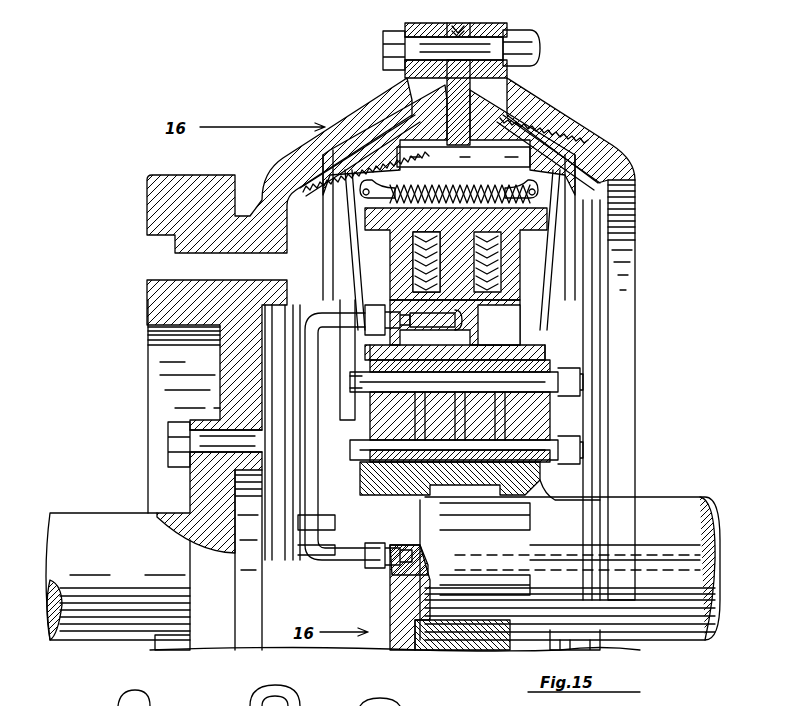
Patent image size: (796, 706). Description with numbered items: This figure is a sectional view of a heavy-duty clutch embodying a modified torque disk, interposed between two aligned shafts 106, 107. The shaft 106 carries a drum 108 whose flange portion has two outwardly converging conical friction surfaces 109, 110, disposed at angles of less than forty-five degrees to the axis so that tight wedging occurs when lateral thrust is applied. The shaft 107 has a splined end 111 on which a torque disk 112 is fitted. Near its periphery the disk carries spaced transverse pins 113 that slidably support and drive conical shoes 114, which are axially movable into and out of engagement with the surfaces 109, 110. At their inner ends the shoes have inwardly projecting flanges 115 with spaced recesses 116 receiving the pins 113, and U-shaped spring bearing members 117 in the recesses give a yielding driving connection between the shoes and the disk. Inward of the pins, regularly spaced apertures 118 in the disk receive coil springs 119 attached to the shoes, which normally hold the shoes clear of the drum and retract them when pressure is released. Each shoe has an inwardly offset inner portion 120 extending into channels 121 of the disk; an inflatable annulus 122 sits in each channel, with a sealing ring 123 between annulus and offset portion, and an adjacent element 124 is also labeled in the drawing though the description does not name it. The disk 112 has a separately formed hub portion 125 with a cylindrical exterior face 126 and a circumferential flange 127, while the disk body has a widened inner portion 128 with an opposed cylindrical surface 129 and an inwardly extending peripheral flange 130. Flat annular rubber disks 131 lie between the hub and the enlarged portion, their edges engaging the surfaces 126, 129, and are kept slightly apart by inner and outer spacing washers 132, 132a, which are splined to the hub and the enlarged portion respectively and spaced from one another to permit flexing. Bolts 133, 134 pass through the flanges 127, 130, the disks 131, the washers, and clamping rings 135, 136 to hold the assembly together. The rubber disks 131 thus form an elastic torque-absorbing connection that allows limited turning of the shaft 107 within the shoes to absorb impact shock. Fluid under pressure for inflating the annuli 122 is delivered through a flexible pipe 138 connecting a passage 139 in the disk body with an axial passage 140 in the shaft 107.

The shaft 106 is at (92, 520).
The shaft 107 is at (660, 636).
The drum 108 is at (217, 465).
The conical friction surface 109 is at (345, 120).
The conical friction surface 110 is at (562, 118).
The splined end 111 is at (405, 645).
The torque disk 112 is at (470, 680).
The transverse pins 113 is at (463, 156).
The conical shoes 114 is at (395, 110).
The inwardly projecting flanges 115 is at (410, 110).
The recesses 116 is at (449, 192).
The U-shaped spring bearing members 117 is at (447, 112).
The apertures 118 is at (456, 242).
The coil springs 119 is at (360, 188).
The inwardly offset inner portion 120 is at (395, 262).
The channels 121 is at (645, 293).
The inflatable annulus 122 is at (455, 263).
The sealing ring 123 is at (355, 250).
The piston 124 is at (645, 218).
The hub portion 125 is at (600, 482).
The cylindrical exterior face 126 is at (555, 510).
The circumferential flange 127 is at (450, 479).
The widened inner portion 128 is at (540, 345).
The cylindrical surface 129 is at (496, 337).
The inwardly extending peripheral flange 130 is at (370, 400).
The flat annular rubber disks 131 is at (370, 425).
The inner spacing washers 132 is at (460, 415).
The outer spacing washers 132a is at (455, 348).
The bolt 133 is at (484, 487).
The bolt 134 is at (486, 412).
The clamping ring 135 is at (570, 462).
The clamping ring 136 is at (560, 360).
The flexible pipe 138 is at (318, 510).
The passage 139 is at (436, 322).
The axial passage 140 is at (610, 560).